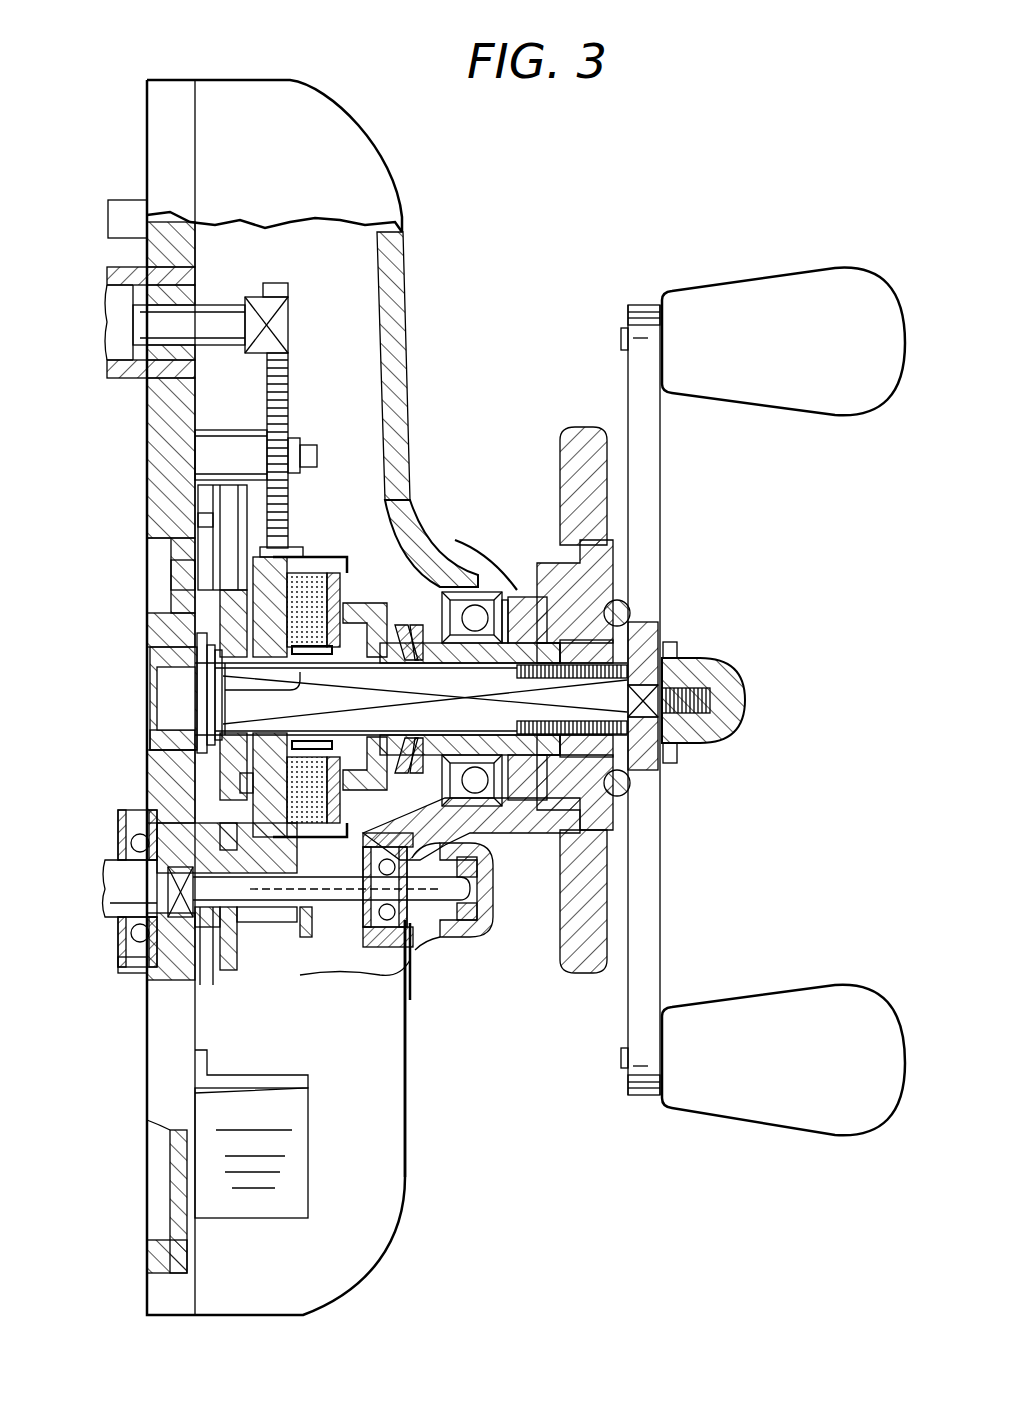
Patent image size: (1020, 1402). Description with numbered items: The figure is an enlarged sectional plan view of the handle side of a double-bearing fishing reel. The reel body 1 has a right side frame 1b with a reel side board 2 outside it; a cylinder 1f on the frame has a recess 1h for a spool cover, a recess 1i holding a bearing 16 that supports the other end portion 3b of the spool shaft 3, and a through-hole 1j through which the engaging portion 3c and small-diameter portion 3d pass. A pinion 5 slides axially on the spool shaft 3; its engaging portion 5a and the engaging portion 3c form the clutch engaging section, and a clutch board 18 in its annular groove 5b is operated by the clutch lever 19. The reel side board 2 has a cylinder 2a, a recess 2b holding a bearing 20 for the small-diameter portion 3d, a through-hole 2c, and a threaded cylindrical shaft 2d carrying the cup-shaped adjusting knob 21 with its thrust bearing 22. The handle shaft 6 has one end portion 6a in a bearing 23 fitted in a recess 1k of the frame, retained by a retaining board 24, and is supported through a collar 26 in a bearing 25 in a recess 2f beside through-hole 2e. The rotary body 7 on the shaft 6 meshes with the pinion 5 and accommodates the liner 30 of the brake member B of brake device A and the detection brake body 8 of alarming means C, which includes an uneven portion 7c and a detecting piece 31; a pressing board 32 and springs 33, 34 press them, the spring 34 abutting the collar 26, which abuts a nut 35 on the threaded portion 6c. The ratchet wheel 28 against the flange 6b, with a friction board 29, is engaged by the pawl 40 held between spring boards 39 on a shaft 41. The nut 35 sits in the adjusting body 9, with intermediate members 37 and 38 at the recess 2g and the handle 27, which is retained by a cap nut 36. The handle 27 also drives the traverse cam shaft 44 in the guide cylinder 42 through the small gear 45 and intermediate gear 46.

The reel body 1 is at (179, 72).
The right side frame 1b is at (157, 95).
The cylinder 1f is at (118, 965).
The recess 1h is at (160, 1240).
The recess 1i is at (118, 823).
The through-hole 1j is at (205, 985).
The recess 1k is at (152, 740).
The reel side board 2 is at (229, 72).
The cylinder 2a is at (410, 985).
The recess 2b is at (430, 937).
The through-hole 2c is at (470, 843).
The cylindrical shaft 2d is at (445, 942).
The through-hole 2e is at (517, 600).
The recess 2f is at (495, 600).
The recess 2g is at (615, 806).
The spool shaft 3 is at (354, 925).
The other end portion 3b is at (152, 975).
The engaging portion 3c is at (112, 903).
The small-diameter portion 3d is at (345, 915).
The pinion 5 is at (305, 940).
The engaging portion 5a is at (105, 880).
The annular groove 5b is at (215, 833).
The shaft 6 is at (722, 696).
The one end portion 6a is at (185, 708).
The flange 6b is at (212, 645).
The threaded portion 6c is at (680, 752).
The rotary body 7 is at (342, 542).
The uneven portion 7c is at (240, 680).
The detection brake body 8 is at (354, 570).
The adjusting body 9 is at (583, 427).
The bearing 16 is at (132, 970).
The clutch board 18 is at (235, 965).
The clutch lever 19 is at (308, 1213).
The bearing 20 is at (400, 940).
The adjusting knob 21 is at (495, 885).
The thrust bearing 22 is at (493, 915).
The bearing 23 is at (160, 655).
The retaining board 24 is at (170, 572).
The bearing 25 is at (470, 600).
The collar 26 is at (640, 778).
The handle 27 is at (652, 497).
The reverse-rotation preventing ratchet wheel 28 is at (225, 598).
The friction board 29 is at (240, 785).
The liner 30 is at (315, 565).
The detecting piece 31 is at (207, 692).
The pressing board 32 is at (370, 603).
The spring 33 is at (407, 478).
The spring 34 is at (450, 600).
The nut 35 is at (665, 657).
The cap nut 36 is at (745, 718).
The intermediate member 37 is at (527, 600).
The intermediate member 38 is at (630, 608).
The spring boards 39 is at (237, 490).
The reverse-rotation preventing pawl 40 is at (165, 548).
The shaft 41 is at (220, 540).
The guide cylinder 42 is at (120, 285).
The traverse cam shaft 44 is at (226, 307).
The small gear 45 is at (268, 297).
The intermediate gear 46 is at (285, 395).
The brake device A is at (356, 500).
The brake member B is at (322, 381).
The alarming means C is at (320, 540).